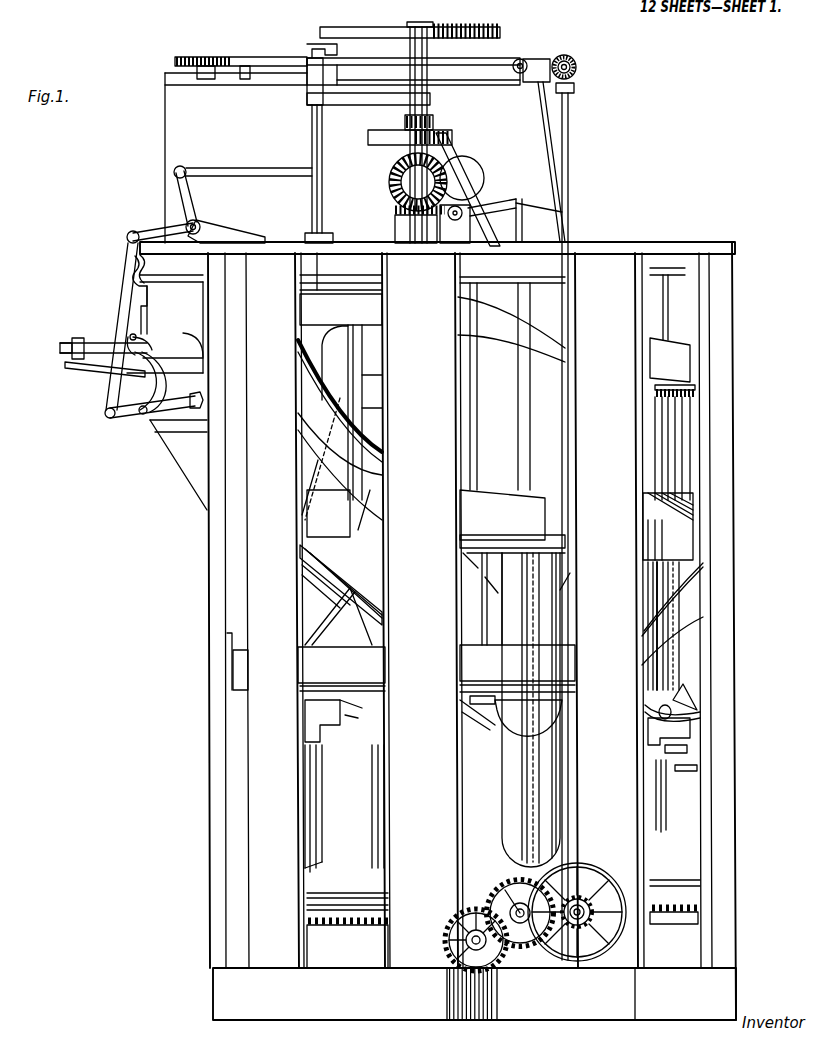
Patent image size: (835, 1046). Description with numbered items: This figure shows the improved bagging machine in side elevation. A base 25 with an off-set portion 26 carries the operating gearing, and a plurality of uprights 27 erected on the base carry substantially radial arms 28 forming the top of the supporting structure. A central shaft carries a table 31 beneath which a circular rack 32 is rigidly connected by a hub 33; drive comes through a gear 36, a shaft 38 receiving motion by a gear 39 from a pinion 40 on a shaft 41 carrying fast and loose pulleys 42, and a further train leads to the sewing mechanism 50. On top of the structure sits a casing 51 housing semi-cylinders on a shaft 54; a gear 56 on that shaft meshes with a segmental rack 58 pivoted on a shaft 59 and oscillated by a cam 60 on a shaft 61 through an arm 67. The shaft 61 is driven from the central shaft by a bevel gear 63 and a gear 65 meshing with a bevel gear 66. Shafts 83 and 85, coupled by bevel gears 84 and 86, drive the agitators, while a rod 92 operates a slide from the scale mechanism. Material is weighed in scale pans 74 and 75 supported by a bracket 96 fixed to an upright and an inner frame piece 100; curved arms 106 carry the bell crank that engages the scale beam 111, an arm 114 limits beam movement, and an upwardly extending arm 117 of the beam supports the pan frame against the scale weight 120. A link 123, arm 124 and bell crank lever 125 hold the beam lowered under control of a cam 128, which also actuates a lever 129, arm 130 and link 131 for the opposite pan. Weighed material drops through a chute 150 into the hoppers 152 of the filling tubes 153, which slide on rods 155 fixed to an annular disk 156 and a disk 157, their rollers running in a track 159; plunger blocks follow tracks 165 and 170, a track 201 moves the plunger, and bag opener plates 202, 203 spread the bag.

The base 25 is at (296, 1005).
The off-set portion 26 is at (517, 1030).
The uprights 27 is at (222, 776).
The radial arms 28 is at (668, 245).
The table 31 is at (660, 886).
The circular rack 32 is at (347, 926).
The hub 33 is at (472, 994).
The gear 36 is at (442, 920).
The shaft 38 is at (505, 895).
The gear 39 is at (525, 942).
The pinion 40 is at (574, 928).
The shaft 41 is at (598, 875).
The fast and loose pulleys 42 is at (610, 955).
The sewing mechanism 50 is at (690, 742).
The casing 51 is at (175, 143).
The shaft 54 is at (205, 80).
The gear 56 is at (175, 61).
The segmental rack 58 is at (262, 58).
The shaft 59 is at (310, 125).
The cam 60 is at (410, 39).
The shaft 61 is at (430, 108).
The bevel gear 63 is at (478, 170).
The gear 65 is at (390, 180).
The bevel gear 66 is at (396, 223).
The arm 67 is at (315, 65).
The scale pan 74 is at (165, 327).
The scale pan 75 is at (372, 337).
The shaft 83 is at (545, 60).
The bevel gears 84 is at (525, 60).
The shaft 85 is at (578, 437).
The bevel gears 86 is at (577, 67).
The rod 92 is at (171, 269).
The bracket 96 is at (161, 382).
The inner frame piece 100 is at (355, 390).
The curved arm 106 is at (152, 350).
The scale beam 111 is at (97, 342).
The arm 114 is at (92, 370).
The upwardly extending arm 117 is at (158, 295).
The scale weight 120 is at (74, 338).
The link 123 is at (125, 269).
The arm 124 is at (125, 418).
The bell crank lever 125 is at (152, 228).
The cam 128 is at (445, 135).
The lever 129 is at (455, 158).
The arm 130 is at (481, 209).
The link 131 is at (562, 212).
The chute 150 is at (178, 465).
The hoppers 152 is at (496, 491).
The filling tubes 153 is at (340, 808).
The rods 155 is at (750, 452).
The annular disk 156 is at (335, 700).
The disk 157 is at (512, 268).
The track 159 is at (517, 663).
The track 165 is at (515, 567).
The track 170 is at (580, 481).
The track 201 is at (700, 715).
The bag opener plate 202 is at (750, 640).
The bag opener plate 203 is at (318, 738).